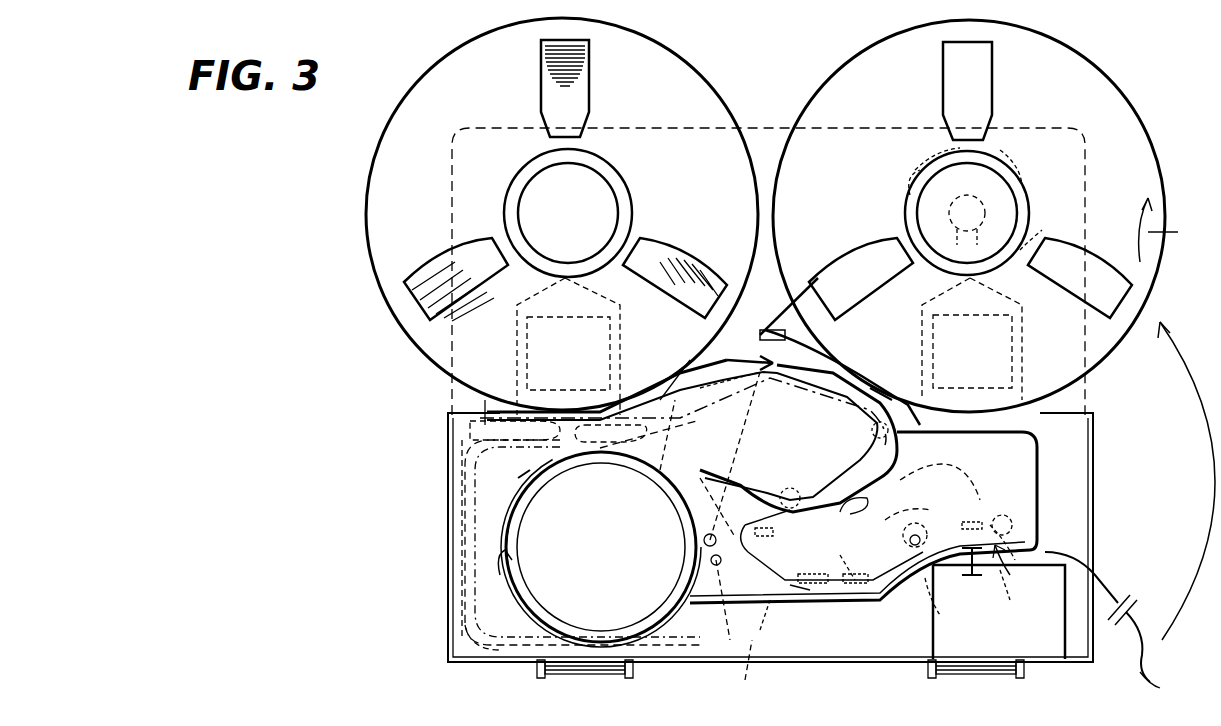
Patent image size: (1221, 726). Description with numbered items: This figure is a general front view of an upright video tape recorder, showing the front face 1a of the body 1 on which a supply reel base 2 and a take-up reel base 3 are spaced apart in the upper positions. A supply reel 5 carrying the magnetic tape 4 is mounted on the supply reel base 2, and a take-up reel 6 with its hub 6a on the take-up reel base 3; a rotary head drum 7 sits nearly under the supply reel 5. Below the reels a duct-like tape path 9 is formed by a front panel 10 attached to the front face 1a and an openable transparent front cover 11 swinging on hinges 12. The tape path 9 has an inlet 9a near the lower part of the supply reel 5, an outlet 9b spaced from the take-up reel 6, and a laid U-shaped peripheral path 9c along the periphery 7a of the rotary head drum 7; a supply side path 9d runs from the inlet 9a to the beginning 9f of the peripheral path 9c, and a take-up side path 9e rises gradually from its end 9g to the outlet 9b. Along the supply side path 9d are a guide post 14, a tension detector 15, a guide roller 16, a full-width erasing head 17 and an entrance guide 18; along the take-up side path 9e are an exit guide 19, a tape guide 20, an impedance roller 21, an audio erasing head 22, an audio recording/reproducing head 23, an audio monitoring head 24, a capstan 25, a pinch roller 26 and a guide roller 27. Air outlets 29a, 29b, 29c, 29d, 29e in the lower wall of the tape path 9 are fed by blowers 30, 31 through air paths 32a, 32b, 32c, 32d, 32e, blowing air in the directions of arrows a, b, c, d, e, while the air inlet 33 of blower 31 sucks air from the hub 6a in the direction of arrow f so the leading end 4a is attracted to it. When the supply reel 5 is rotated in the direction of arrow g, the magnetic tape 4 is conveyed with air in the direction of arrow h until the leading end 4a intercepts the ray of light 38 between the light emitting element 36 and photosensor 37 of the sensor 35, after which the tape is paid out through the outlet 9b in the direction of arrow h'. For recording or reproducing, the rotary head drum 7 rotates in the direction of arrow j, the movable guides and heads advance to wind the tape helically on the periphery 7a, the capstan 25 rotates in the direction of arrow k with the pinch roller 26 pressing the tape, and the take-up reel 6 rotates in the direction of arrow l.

The body 1 is at (428, 508).
The front face 1a is at (452, 413).
The supply reel base 2 is at (585, 200).
The take-up reel base 3 is at (930, 215).
The magnetic tape 4 is at (840, 395).
The leading end 4a is at (1148, 687).
The supply reel 5 is at (470, 70).
The take-up reel 6 is at (860, 75).
The hub 6a is at (1020, 180).
The rotary head drum 7 is at (600, 615).
The periphery 7a is at (528, 480).
The tape path 9 is at (790, 400).
The inlet 9a is at (805, 300).
The outlet 9b is at (1053, 547).
The peripheral path 9c is at (508, 575).
The supply side path 9d is at (880, 398).
The take-up side path 9e is at (880, 618).
The beginning of the peripheral path 9f is at (733, 475).
The end of the peripheral path 9g is at (690, 595).
The front panel 10 is at (452, 592).
The front cover 11 is at (462, 662).
The hinges 12 is at (600, 678).
The guide post 14 is at (755, 395).
The tension detector 15 is at (880, 422).
The guide roller 16 is at (790, 490).
The full-width erasing head 17 is at (775, 532).
The entrance guide 18 is at (715, 530).
The exit guide 19 is at (710, 560).
The tape guide 20 is at (740, 548).
The impedance roller 21 is at (798, 588).
The audio erasing head 22 is at (812, 574).
The audio recording/reproducing head 23 is at (858, 550).
The audio monitoring head 24 is at (858, 574).
The capstan 25 is at (938, 609).
The pinch roller 26 is at (925, 545).
The guide roller 27 is at (1008, 511).
The air outlet 29a is at (488, 400).
The air outlet 29b is at (690, 360).
The air outlet 29c is at (565, 637).
The air outlet 29d is at (775, 600).
The air outlet 29e is at (868, 505).
The blower 30 is at (540, 330).
The blower 31 is at (1012, 346).
The air path 32a is at (460, 445).
The air path 32b is at (662, 395).
The air path 32c is at (465, 622).
The air path 32d is at (748, 675).
The air path 32e is at (940, 472).
The air inlet 33 is at (985, 208).
The sensor 35 is at (1012, 578).
The light emitting element 36 is at (1015, 560).
The photosensor 37 is at (975, 578).
The ray of light 38 is at (1013, 600).
The arrow a is at (492, 420).
The arrow b is at (756, 350).
The arrow c is at (790, 495).
The arrow d is at (630, 650).
The arrow e is at (835, 583).
The arrow f is at (930, 265).
The arrow g is at (478, 68).
The arrow h is at (722, 522).
The arrow h' is at (1181, 481).
The arrow j is at (660, 497).
The arrow k is at (932, 575).
The arrow l is at (1163, 230).